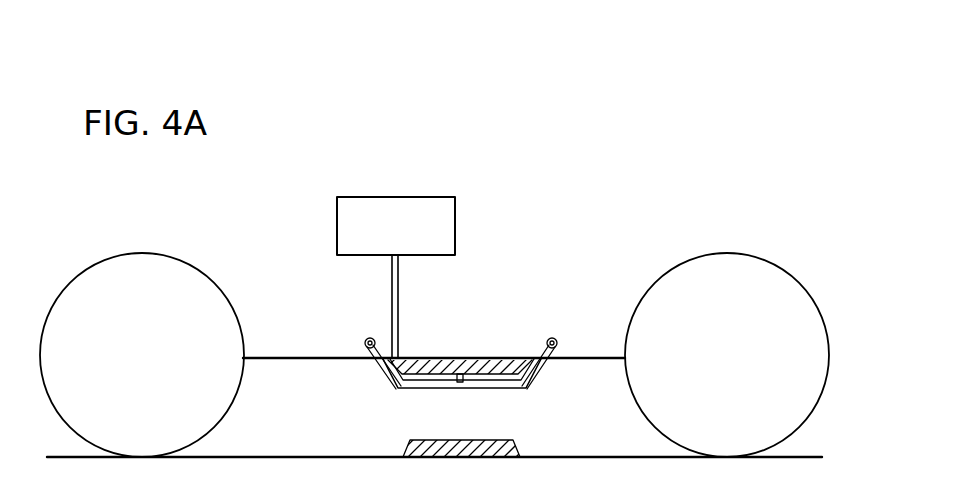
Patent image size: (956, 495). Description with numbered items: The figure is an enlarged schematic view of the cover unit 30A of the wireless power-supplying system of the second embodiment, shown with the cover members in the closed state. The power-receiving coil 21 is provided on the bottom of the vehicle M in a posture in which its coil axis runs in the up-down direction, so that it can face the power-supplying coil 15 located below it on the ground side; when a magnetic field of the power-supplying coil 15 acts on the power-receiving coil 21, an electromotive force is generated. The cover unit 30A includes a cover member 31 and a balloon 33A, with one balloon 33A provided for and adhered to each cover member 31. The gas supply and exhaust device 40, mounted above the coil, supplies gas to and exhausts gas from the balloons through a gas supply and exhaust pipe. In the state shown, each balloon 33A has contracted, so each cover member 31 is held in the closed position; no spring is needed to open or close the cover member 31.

The gas supply and exhaust device 40 is at (434, 197).
The power-receiving coil 21 is at (477, 365).
The balloon 33A is at (418, 378).
The cover member 31 is at (382, 366).
The cover unit 30A is at (387, 408).
The power-supplying coil 15 is at (510, 446).
The vehicle M is at (270, 352).